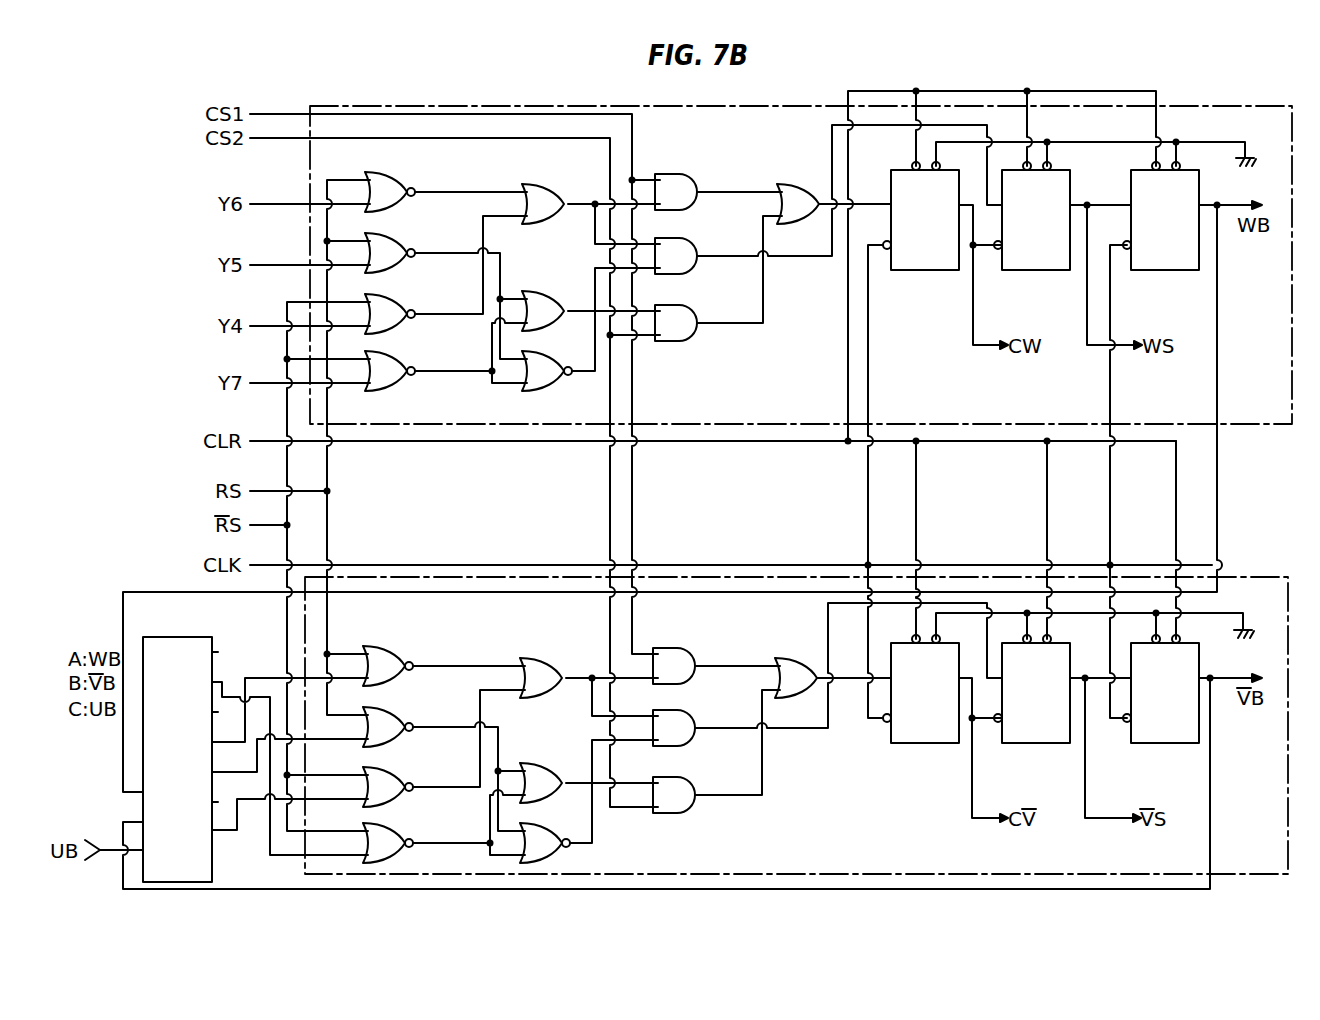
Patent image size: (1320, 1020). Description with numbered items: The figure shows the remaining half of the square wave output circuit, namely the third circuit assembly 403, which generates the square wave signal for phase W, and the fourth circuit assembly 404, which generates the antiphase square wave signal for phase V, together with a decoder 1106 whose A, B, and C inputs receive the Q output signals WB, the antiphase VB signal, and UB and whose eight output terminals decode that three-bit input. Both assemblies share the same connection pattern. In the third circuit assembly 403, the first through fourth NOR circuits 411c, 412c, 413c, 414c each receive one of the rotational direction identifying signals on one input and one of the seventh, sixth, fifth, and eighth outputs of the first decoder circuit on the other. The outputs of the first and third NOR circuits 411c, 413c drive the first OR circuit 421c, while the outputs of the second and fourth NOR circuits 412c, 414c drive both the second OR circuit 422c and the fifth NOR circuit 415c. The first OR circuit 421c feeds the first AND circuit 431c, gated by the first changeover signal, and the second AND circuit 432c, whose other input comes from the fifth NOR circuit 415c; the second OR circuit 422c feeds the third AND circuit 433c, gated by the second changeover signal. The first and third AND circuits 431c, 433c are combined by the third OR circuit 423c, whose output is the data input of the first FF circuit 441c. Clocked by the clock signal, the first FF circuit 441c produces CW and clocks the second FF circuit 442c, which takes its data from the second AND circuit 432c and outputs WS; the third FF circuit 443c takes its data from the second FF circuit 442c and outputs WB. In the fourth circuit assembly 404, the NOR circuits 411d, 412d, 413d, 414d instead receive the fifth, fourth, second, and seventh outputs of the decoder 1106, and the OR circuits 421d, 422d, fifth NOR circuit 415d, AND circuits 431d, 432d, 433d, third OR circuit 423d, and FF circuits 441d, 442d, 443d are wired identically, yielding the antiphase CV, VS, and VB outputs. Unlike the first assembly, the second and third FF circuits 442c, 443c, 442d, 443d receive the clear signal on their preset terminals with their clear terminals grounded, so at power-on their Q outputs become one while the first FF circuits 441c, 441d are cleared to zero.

The third circuit assembly 403 is at (1248, 106).
The fourth circuit assembly 404 is at (1248, 577).
The decoder 1106 is at (168, 637).
The first NOR circuit 411c is at (396, 178).
The second NOR circuit 412c is at (396, 238).
The third NOR circuit 413c is at (396, 300).
The fourth NOR circuit 414c is at (396, 356).
The first OR circuit 421c is at (536, 186).
The second OR circuit 422c is at (536, 295).
The fifth NOR circuit 415c is at (536, 351).
The first AND circuit 431c is at (676, 175).
The second AND circuit 432c is at (676, 238).
The third AND circuit 433c is at (676, 305).
The third OR circuit 423c is at (795, 186).
The first FF circuit 441c is at (924, 270).
The second FF circuit 442c is at (1035, 270).
The third FF circuit 443c is at (1164, 270).
The first NOR circuit 411d is at (396, 651).
The second NOR circuit 412d is at (396, 713).
The third NOR circuit 413d is at (396, 771).
The fourth NOR circuit 414d is at (396, 830).
The first OR circuit 421d is at (536, 660).
The second OR circuit 422d is at (536, 766).
The fifth NOR circuit 415d is at (536, 825).
The first AND circuit 431d is at (676, 646).
The second AND circuit 432d is at (676, 709).
The third AND circuit 433d is at (676, 779).
The third OR circuit 423d is at (793, 659).
The first FF circuit 441d is at (924, 743).
The second FF circuit 442d is at (1035, 743).
The third FF circuit 443d is at (1164, 743).